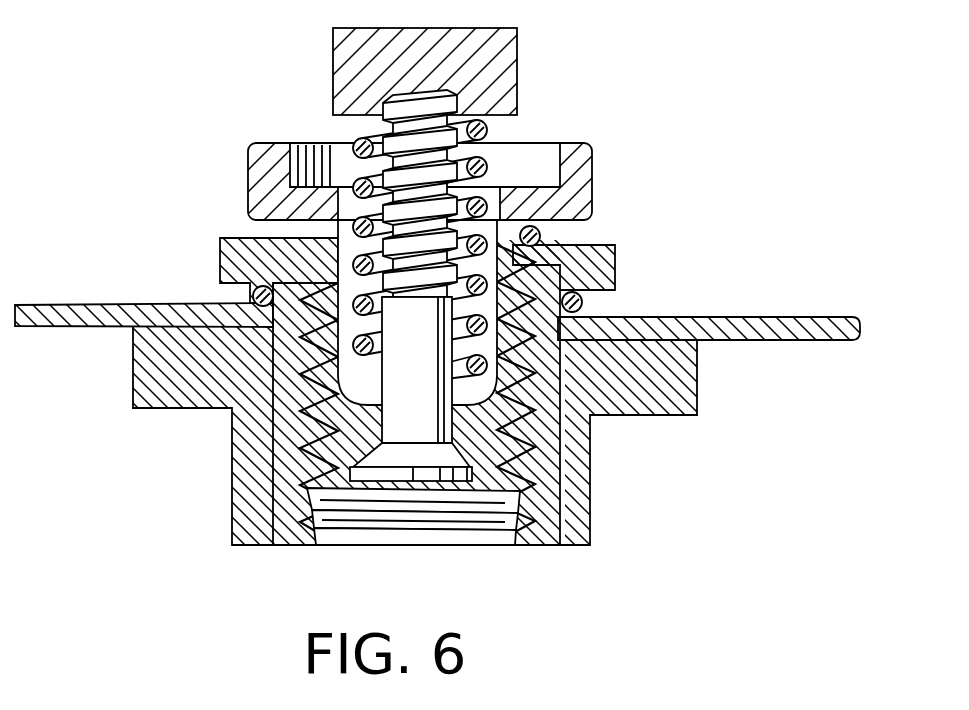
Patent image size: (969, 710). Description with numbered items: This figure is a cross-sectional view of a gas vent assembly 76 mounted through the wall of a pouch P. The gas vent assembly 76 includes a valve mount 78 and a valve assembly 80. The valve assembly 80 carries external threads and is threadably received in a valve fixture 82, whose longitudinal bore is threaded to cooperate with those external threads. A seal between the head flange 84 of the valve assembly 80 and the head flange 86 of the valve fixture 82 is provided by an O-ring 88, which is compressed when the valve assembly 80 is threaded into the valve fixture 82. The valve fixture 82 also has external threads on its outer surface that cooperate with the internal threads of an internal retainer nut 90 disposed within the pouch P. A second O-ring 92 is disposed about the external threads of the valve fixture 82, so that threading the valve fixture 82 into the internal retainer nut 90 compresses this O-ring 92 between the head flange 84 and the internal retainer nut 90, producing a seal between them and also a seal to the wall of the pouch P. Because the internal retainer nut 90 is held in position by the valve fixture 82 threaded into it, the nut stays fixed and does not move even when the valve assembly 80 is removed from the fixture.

The gas vent assembly 76 is at (668, 222).
The valve mount 78 is at (640, 295).
The valve assembly 80 is at (640, 122).
The valve fixture 82 is at (617, 265).
The head flange 84 is at (250, 168).
The head flange 86 is at (226, 238).
The O-ring 88 is at (592, 193).
The internal retainer nut 90 is at (597, 425).
The O-ring 92 is at (255, 290).
The pouch P is at (797, 317).